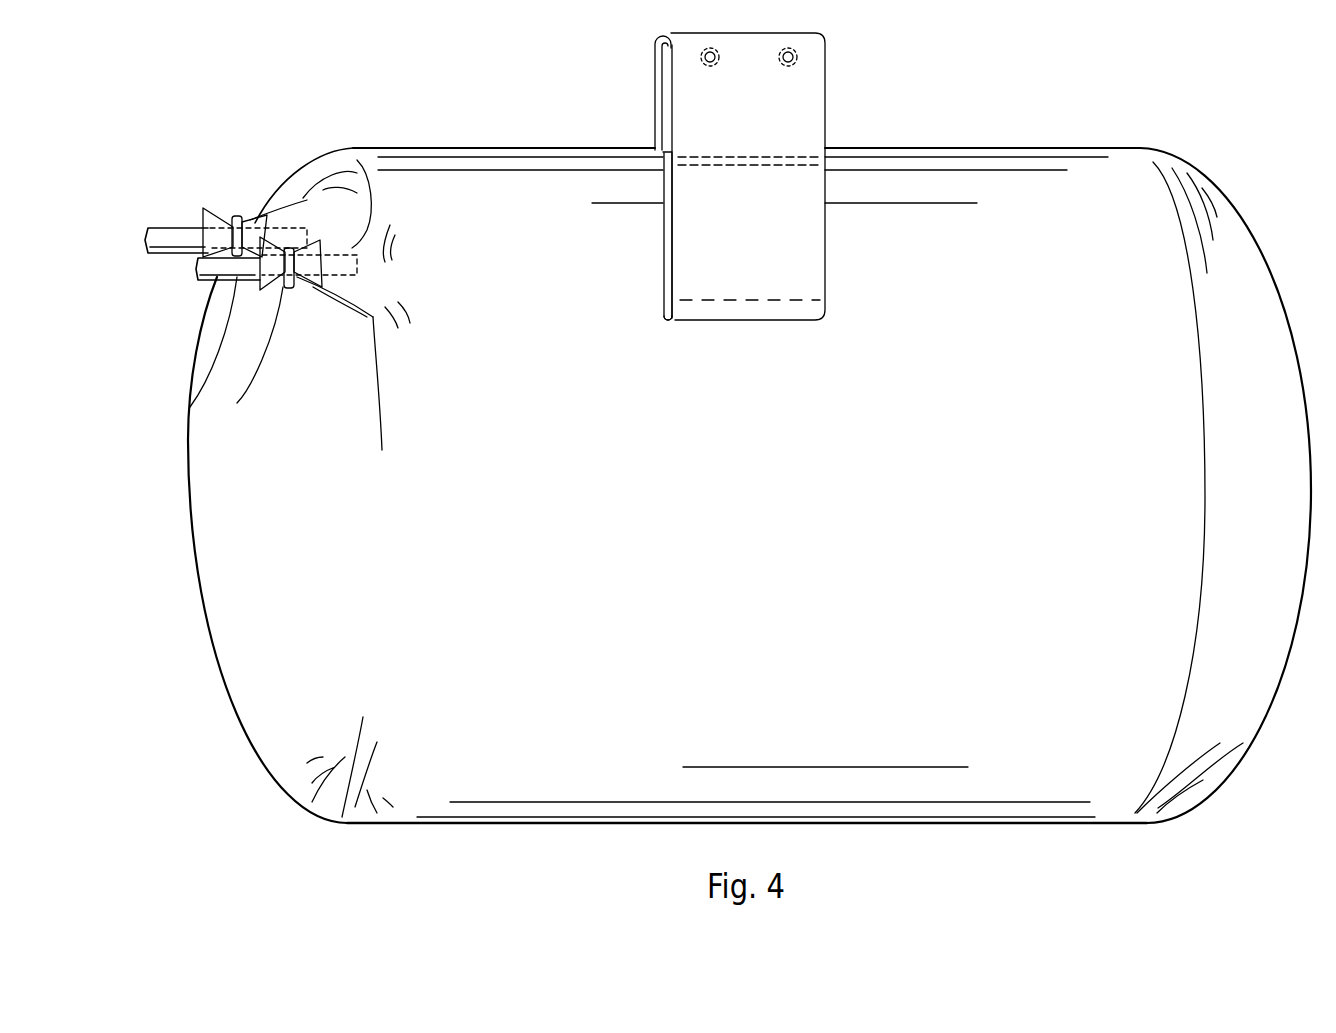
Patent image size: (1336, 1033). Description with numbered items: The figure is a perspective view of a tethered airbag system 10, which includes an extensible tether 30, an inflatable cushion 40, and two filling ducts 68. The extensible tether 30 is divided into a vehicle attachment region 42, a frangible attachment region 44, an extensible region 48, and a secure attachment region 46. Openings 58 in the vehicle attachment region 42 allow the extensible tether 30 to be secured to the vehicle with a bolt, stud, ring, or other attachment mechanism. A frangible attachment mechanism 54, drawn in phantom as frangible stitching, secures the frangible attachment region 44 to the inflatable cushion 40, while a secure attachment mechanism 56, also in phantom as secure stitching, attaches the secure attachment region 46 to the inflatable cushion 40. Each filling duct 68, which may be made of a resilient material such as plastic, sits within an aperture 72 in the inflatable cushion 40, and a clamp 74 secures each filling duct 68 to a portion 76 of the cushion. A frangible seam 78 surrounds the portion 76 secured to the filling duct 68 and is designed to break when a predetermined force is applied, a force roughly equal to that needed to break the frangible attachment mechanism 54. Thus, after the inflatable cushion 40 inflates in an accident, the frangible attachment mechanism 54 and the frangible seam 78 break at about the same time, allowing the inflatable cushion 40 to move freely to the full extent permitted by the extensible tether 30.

The tethered airbag system 10 is at (462, 110).
The extensible tether 30 is at (623, 120).
The inflatable cushion 40 is at (752, 581).
The vehicle attachment region 42 is at (655, 63).
The frangible attachment region 44 is at (667, 322).
The secure attachment region 46 is at (662, 163).
The extensible region 48 is at (663, 233).
The frangible attachment mechanism 54 is at (823, 312).
The secure attachment mechanism 56 is at (778, 157).
The openings 58 is at (705, 57).
The filling ducts 68 is at (165, 230).
The aperture 72 is at (210, 224).
The clamp 74 is at (236, 218).
The portion of the inflatable cushion 76 is at (253, 216).
The frangible seam 78 is at (307, 225).